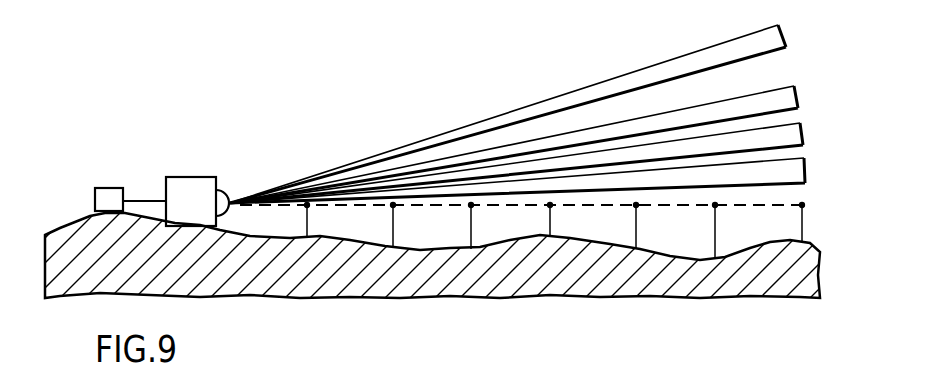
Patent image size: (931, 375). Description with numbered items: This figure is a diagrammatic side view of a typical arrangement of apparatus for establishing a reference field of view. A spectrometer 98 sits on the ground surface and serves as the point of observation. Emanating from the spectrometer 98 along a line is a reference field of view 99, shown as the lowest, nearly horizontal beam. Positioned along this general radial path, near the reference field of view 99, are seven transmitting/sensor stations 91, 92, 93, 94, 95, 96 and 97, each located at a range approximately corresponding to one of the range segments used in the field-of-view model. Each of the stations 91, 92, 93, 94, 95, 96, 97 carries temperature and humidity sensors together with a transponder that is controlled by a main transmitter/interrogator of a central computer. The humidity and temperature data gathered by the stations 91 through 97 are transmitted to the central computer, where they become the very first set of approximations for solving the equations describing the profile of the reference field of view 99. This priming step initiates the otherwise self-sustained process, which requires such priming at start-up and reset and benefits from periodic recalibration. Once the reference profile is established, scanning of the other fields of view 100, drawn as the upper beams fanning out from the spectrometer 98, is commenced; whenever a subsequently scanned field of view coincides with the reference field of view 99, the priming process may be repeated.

The sensor station 91 is at (307, 205).
The sensor station 92 is at (393, 205).
The sensor station 93 is at (471, 205).
The sensor station 94 is at (550, 205).
The sensor station 95 is at (636, 205).
The sensor station 96 is at (715, 205).
The sensor station 97 is at (802, 205).
The spectrometer 98 is at (194, 177).
The reference field of view 99 is at (807, 170).
The fields of view 100 is at (789, 38).